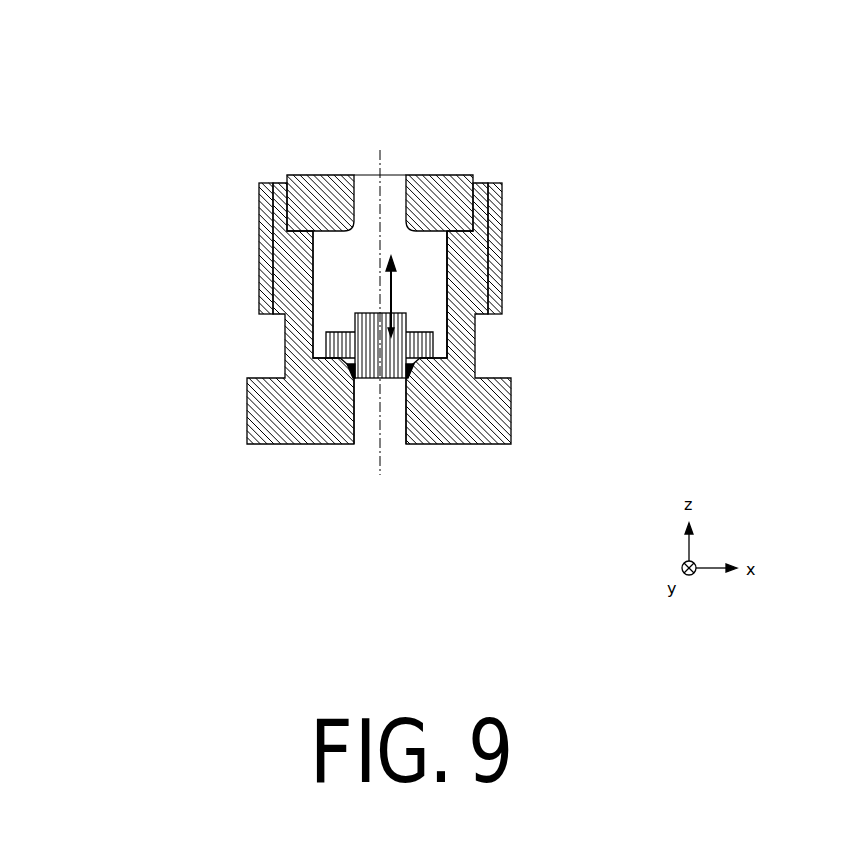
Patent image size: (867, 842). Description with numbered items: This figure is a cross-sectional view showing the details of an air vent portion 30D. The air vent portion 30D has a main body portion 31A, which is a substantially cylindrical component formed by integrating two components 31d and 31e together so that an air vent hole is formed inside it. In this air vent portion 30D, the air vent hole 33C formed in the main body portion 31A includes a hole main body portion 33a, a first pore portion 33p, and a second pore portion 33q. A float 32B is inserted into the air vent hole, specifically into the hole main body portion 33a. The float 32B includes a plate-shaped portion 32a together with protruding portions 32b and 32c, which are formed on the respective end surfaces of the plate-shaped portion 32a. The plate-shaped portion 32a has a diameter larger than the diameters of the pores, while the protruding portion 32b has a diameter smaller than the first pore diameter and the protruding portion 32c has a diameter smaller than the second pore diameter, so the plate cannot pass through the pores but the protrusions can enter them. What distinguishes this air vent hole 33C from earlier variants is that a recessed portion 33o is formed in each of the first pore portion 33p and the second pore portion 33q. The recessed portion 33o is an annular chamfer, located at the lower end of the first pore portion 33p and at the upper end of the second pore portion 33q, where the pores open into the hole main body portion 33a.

The air vent portion 30D is at (692, 87).
The main body portion 31A is at (287, 220).
The component 31d is at (309, 186).
The component 31e is at (323, 243).
The float 32B is at (249, 320).
The plate-shaped portion 32a is at (289, 331).
The protruding portion 32b is at (275, 323).
The protruding portion 32c is at (279, 357).
The air vent hole 33C is at (499, 309).
The first pore portion 33p is at (505, 196).
The recessed portion 33o is at (531, 288).
The hole main body portion 33a is at (484, 294).
The second pore portion 33q is at (505, 376).